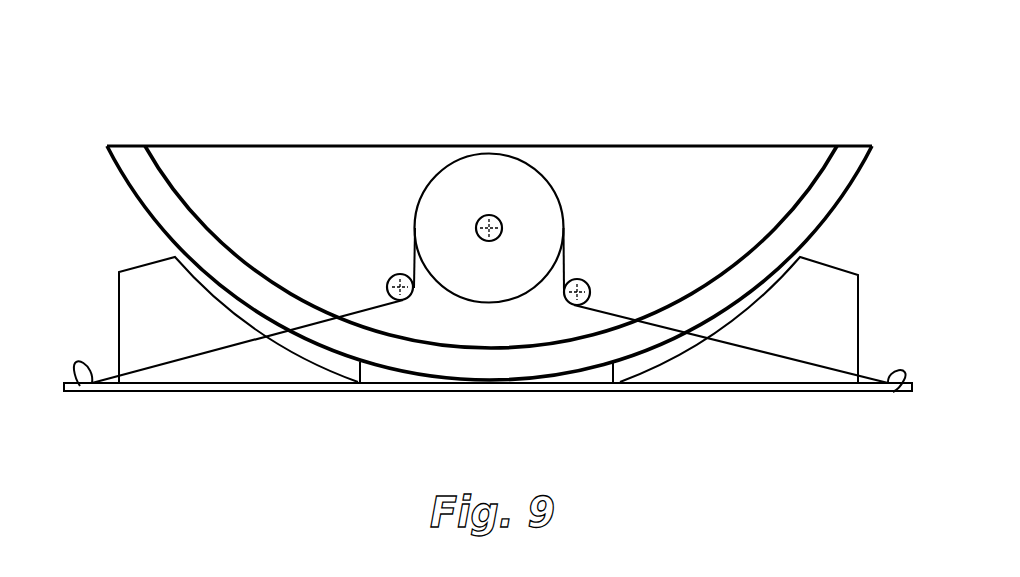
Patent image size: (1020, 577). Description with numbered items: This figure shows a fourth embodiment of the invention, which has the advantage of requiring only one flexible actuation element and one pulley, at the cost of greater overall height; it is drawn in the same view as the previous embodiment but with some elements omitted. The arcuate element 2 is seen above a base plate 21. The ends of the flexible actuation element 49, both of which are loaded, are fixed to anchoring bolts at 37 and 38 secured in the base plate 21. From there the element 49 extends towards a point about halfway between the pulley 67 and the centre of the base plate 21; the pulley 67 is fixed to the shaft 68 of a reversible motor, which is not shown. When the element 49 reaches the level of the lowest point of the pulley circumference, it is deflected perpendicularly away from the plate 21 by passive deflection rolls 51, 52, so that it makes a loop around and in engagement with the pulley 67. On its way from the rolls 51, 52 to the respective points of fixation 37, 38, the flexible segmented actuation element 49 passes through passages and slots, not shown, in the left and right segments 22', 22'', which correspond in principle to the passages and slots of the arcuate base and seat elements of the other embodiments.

The trough 2 is at (787, 237).
The base plate 21 is at (815, 387).
The left segment 22' is at (217, 306).
The right segment 22'' is at (672, 355).
The anchoring bolt 37 is at (80, 386).
The anchoring bolt 38 is at (893, 392).
The flexible actuation element 49 is at (237, 345).
The passive deflection roll 51 is at (388, 281).
The passive deflection roll 52 is at (582, 278).
The pulley 67 is at (458, 197).
The shaft 68 is at (493, 215).